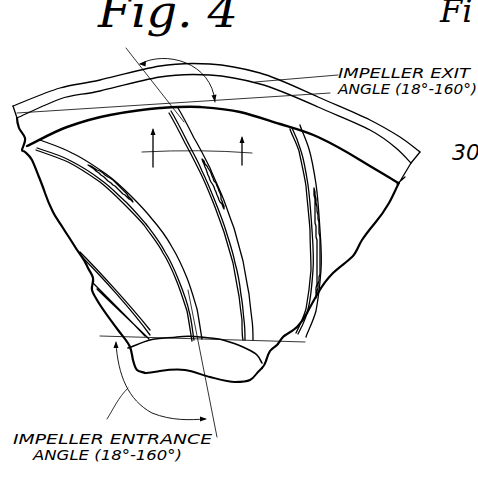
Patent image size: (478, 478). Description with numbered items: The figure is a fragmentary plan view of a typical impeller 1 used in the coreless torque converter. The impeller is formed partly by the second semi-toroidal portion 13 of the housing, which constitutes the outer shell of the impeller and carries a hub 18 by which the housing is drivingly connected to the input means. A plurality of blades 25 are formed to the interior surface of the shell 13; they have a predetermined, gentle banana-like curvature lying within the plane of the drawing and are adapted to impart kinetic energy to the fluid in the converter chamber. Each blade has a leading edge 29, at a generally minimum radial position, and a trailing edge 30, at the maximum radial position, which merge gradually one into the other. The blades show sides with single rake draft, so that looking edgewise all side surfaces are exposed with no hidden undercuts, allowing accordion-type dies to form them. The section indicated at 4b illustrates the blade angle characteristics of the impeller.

The impeller 1 is at (276, 70).
The second semi-toroidal portion 13 is at (117, 123).
The hub 18 is at (186, 357).
The blades 25 is at (175, 257).
The leading edge 29 is at (240, 242).
The trailing edge 30 is at (310, 165).
The flow passage 4b is at (202, 162).